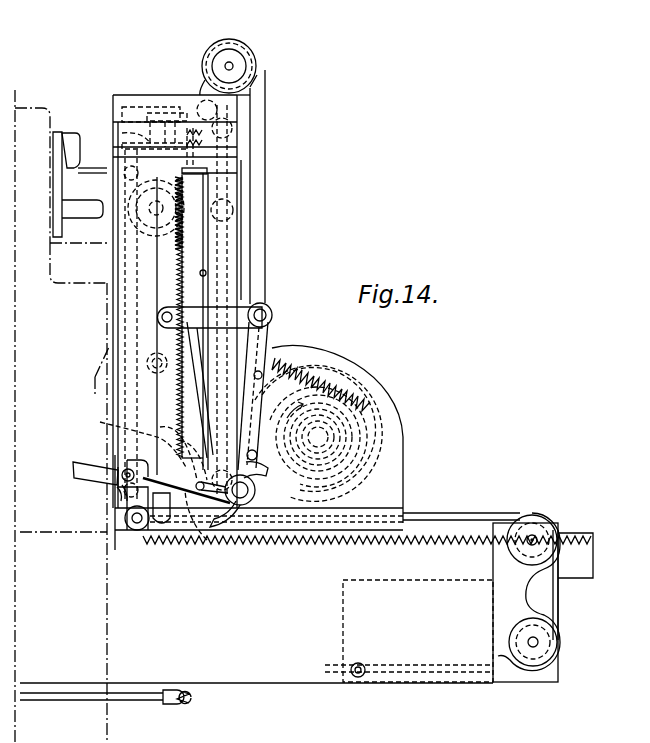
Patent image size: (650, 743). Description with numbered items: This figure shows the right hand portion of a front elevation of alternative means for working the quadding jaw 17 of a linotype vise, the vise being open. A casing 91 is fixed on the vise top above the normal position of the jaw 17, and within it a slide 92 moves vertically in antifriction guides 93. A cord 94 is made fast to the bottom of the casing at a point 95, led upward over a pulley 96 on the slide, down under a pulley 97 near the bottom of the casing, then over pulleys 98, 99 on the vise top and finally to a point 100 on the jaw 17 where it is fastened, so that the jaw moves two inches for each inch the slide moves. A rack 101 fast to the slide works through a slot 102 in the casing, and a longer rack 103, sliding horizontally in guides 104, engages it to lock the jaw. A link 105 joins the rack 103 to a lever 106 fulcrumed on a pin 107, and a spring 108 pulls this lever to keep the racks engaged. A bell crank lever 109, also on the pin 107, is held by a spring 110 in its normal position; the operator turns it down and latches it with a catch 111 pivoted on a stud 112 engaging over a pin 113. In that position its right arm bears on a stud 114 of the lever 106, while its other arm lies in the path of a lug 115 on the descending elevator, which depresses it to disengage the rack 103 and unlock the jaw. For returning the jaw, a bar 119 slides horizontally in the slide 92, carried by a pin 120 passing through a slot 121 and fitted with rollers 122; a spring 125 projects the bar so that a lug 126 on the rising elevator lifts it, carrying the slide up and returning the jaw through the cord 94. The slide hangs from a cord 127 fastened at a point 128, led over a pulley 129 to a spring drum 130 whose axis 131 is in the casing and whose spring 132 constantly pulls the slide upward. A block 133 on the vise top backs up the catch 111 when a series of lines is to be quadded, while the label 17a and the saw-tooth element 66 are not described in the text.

The right hand vise jaw 17 is at (107, 575).
The frame end block 17a is at (575, 555).
The saw blade 66 is at (462, 540).
The casing 91 is at (236, 248).
The slide 92 is at (187, 230).
The antifriction guides 93 is at (230, 188).
The cord 94 is at (183, 303).
The fastening point 95 is at (207, 540).
The pulley 96 is at (157, 253).
The pulley 97 is at (128, 463).
The pulley 98 is at (555, 525).
The pulley 99 is at (562, 660).
The fastening point on jaw 100 is at (358, 678).
The rack 101 is at (217, 176).
The slot 102 is at (206, 273).
The longer rack 103 is at (186, 282).
The guides 104 is at (150, 146).
The link 105 is at (262, 299).
The lever 106 is at (280, 342).
The pin 107 is at (253, 497).
The spring 108 is at (300, 347).
The bell crank lever 109 is at (277, 323).
The spring 110 is at (213, 528).
The catch 111 is at (123, 466).
The stud 112 is at (137, 531).
The pin 113 is at (117, 488).
The stud 114 is at (263, 460).
The lug 115 is at (77, 203).
The bar 119 is at (118, 151).
The pin 120 is at (177, 147).
The slot 121 is at (157, 147).
The roller 122 is at (182, 112).
The spring 125 is at (233, 128).
The lug 126 is at (72, 132).
The cord 127 is at (258, 96).
The fastening point 128 is at (240, 68).
The pulley 129 is at (229, 41).
The spring drum 130 is at (388, 422).
The axis 131 is at (355, 460).
The spring 132 is at (345, 450).
The block 133 is at (162, 530).